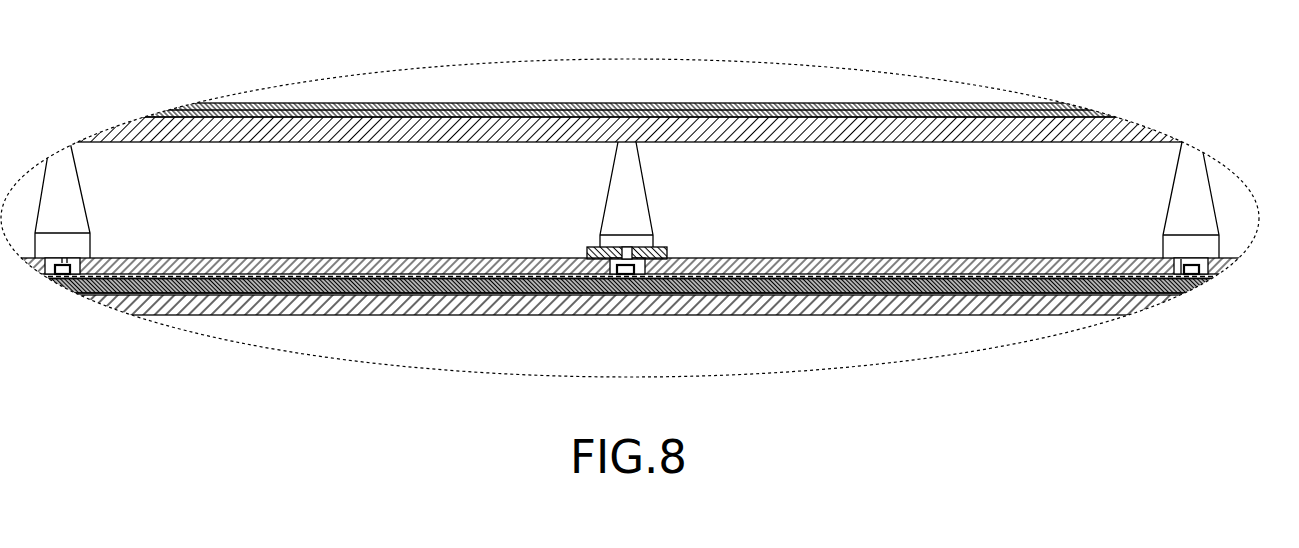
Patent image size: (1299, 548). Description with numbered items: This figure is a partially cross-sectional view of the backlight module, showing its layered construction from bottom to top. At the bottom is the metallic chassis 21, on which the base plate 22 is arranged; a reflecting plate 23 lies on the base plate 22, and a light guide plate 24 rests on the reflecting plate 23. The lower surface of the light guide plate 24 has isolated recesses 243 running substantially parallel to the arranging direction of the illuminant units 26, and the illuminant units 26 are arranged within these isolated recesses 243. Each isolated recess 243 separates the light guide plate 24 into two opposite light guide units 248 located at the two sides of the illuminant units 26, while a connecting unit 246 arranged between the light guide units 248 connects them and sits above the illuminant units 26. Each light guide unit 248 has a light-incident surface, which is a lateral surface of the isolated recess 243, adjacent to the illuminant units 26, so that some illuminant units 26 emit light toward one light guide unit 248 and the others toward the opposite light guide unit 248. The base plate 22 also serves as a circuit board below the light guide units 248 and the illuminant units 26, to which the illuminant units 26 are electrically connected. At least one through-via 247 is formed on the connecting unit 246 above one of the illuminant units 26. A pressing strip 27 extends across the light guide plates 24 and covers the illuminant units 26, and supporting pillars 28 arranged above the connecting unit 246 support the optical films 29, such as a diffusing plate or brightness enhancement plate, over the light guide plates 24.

The metallic chassis 21 is at (1065, 303).
The base plate 22 is at (1190, 292).
The reflecting plate 23 is at (1077, 278).
The light guide plate 24 is at (903, 246).
The isolated recess 243 is at (1203, 258).
The connecting unit 246 is at (1183, 265).
The through-via 247 is at (1190, 263).
The light guide unit 248 is at (997, 273).
The illuminant unit 26 is at (608, 249).
The pressing strip 27 is at (657, 247).
The supporting pillar 28 is at (637, 197).
The optical film 29 is at (860, 92).